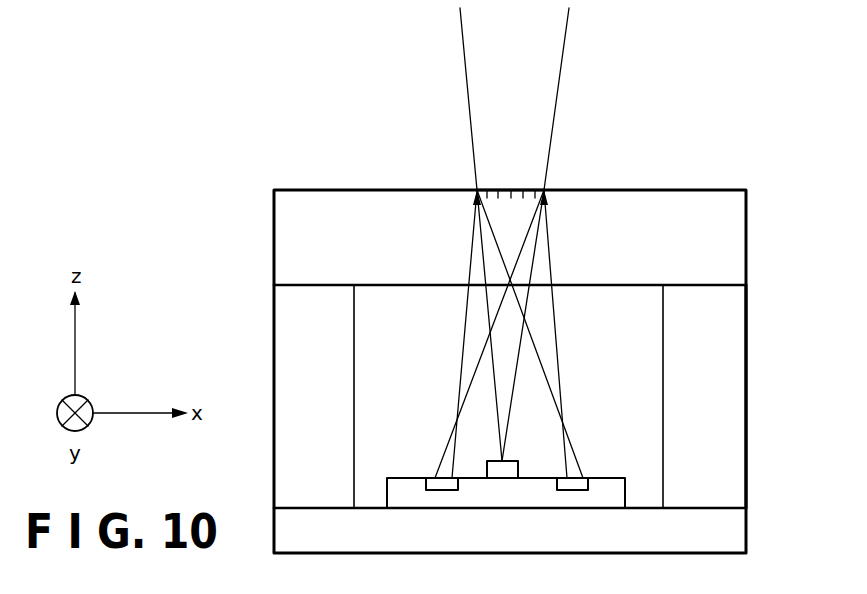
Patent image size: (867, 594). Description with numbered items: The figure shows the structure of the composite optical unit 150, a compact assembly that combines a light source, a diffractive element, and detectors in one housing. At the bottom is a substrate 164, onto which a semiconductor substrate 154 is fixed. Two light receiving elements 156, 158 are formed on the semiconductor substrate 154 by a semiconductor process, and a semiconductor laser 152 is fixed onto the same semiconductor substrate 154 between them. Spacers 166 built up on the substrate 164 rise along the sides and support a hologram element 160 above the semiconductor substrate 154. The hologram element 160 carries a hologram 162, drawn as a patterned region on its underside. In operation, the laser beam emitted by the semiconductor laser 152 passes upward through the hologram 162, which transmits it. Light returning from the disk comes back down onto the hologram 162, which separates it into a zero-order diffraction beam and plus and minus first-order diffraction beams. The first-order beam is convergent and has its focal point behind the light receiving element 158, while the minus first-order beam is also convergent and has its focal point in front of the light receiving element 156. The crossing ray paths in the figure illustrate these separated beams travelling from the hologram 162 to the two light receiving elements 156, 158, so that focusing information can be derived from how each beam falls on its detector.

The composite optical unit 150 is at (268, 281).
The semiconductor laser 152 is at (507, 473).
The semiconductor substrate 154 is at (400, 492).
The light receiving element 156 is at (430, 477).
The light receiving element 158 is at (583, 485).
The hologram element 160 is at (707, 205).
The hologram 162 is at (510, 190).
The substrate 164 is at (734, 529).
The spacers 166 is at (749, 327).